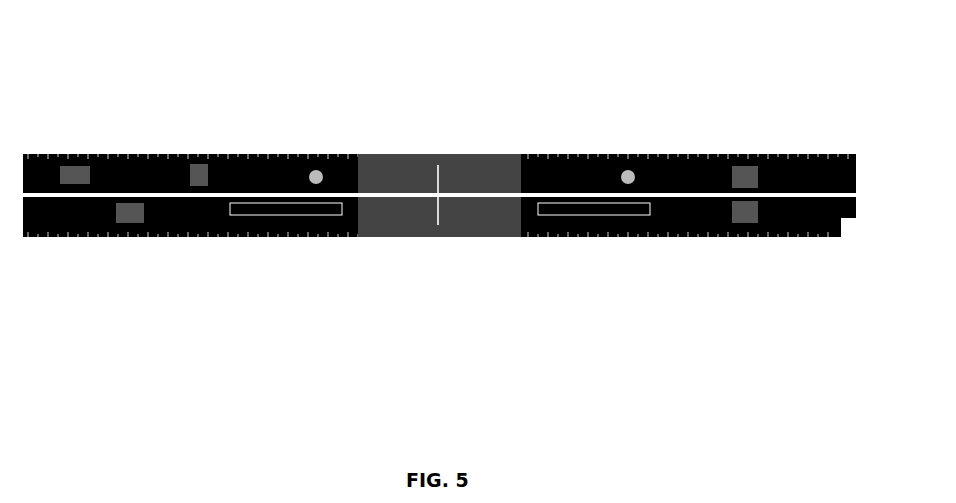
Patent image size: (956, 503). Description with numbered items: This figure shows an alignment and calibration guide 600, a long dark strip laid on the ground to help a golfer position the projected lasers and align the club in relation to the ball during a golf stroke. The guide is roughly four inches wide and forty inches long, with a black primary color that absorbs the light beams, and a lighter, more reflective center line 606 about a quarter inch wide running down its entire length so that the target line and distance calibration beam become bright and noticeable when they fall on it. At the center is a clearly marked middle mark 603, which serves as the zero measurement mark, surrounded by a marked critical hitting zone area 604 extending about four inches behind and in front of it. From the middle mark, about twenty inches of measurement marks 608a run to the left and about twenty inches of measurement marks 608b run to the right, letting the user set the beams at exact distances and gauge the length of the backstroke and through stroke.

The alignment and calibration guide 600 is at (463, 163).
The middle mark 603 is at (426, 162).
The critical hitting zone area 604 is at (513, 232).
The center line 606 is at (828, 188).
The measurement marks 608a is at (133, 232).
The measurement marks 608b is at (690, 232).